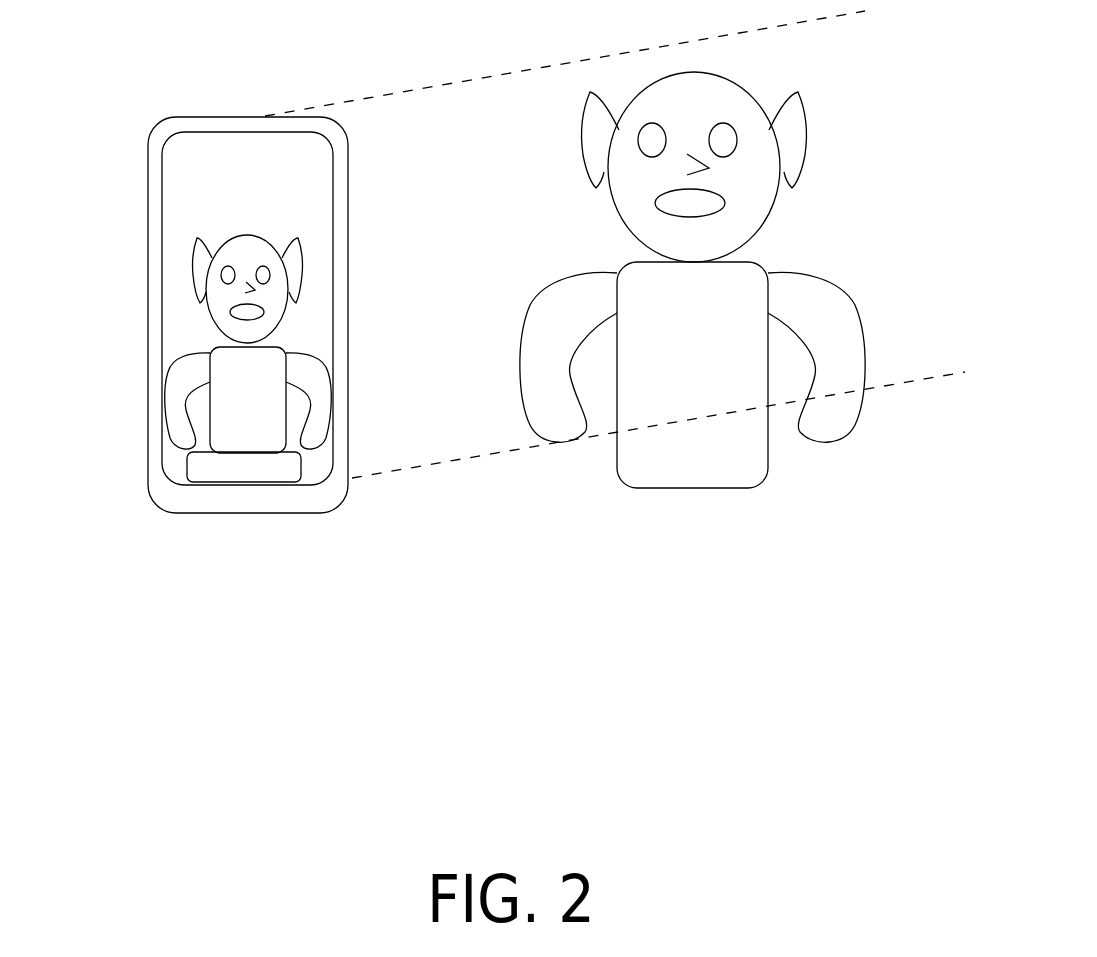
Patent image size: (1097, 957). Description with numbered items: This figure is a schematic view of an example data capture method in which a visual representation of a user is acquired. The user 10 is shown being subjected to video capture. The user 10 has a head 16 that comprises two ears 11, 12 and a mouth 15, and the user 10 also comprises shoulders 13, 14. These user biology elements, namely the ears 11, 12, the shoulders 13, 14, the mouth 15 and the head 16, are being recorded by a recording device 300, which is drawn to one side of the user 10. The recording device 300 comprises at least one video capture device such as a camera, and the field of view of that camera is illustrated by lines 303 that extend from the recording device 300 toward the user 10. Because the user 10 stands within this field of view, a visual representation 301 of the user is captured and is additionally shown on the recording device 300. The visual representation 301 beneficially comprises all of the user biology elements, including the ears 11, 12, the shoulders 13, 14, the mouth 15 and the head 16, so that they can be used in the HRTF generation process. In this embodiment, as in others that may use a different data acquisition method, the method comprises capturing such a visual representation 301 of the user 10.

The user 10 is at (715, 244).
The ear 11 is at (582, 158).
The ear 12 is at (806, 130).
The shoulder 13 is at (590, 272).
The shoulder 14 is at (770, 264).
The mouth 15 is at (653, 205).
The head 16 is at (714, 71).
The recording device 300 is at (151, 133).
The visual representation 301 is at (188, 284).
The lines 303 is at (373, 96).